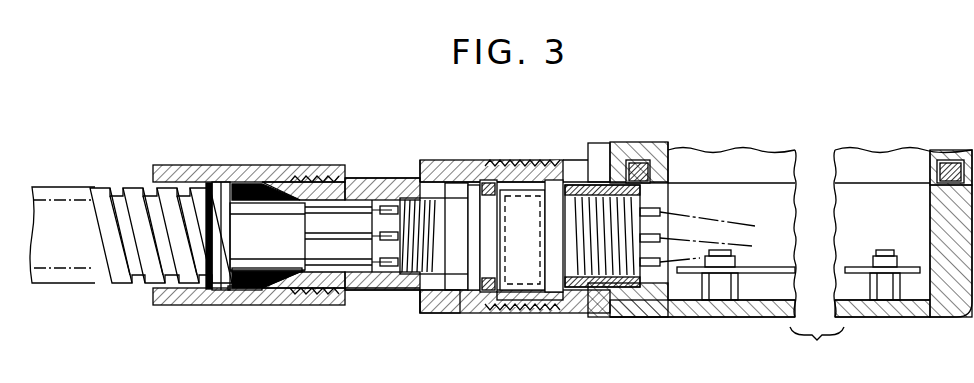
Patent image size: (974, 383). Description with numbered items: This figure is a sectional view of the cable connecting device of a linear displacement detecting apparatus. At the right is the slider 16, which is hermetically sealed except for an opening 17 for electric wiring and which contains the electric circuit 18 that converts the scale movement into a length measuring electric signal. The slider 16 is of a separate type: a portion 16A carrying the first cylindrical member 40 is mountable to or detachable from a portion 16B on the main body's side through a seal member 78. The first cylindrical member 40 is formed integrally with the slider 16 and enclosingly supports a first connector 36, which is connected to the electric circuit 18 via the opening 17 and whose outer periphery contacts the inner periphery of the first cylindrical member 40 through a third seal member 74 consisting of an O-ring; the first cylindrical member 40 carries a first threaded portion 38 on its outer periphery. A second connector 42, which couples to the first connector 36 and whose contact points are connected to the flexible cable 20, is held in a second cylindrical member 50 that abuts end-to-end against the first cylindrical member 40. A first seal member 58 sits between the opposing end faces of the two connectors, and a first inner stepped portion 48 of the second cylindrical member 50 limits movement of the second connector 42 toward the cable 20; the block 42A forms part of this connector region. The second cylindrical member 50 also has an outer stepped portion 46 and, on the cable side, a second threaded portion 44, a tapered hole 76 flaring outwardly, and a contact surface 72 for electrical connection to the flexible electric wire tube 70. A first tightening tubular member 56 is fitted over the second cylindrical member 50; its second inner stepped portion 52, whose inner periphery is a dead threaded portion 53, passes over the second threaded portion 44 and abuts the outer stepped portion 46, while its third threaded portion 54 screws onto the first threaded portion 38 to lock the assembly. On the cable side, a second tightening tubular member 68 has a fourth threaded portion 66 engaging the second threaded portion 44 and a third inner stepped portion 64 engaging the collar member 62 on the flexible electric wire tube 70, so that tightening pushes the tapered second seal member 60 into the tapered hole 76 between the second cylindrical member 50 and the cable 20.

The flexible electric wire tube 70 is at (99, 190).
The third inner stepped portion 64 is at (208, 181).
The member on the side of the cable 62 is at (221, 189).
The second tightening tubular member 68 is at (267, 150).
The tapered hole 76 is at (270, 189).
The fourth threaded portion 66 is at (315, 185).
The second threaded portion 44 is at (330, 188).
The second cylindrical member 50 is at (393, 178).
The outer stepped portion 46 is at (453, 180).
The first inner stepped portion 48 is at (478, 173).
The first seal member 58 is at (500, 172).
The insulator block 42A is at (545, 170).
The first threaded portion 38 is at (566, 180).
The first cylindrical member 40 is at (588, 176).
The seal member 78 is at (639, 160).
The opening for an electric wiring 17 is at (670, 198).
The portion on the main body's side 16B is at (947, 160).
The electric circuit 18 is at (771, 267).
The contact surface 72 is at (230, 290).
The second seal member 60 is at (247, 277).
The flexible cable 20 is at (294, 258).
The dead threaded portion 53 is at (417, 298).
The second inner stepped portion 52 is at (440, 300).
The second connector 42 is at (457, 264).
The first tightening tubular member 56 is at (505, 308).
The third threaded portion 54 is at (538, 308).
The first connector 36 is at (570, 288).
The third seal member 74 is at (598, 296).
The slider 16 is at (742, 320).
The portion to be separated 16A is at (914, 319).